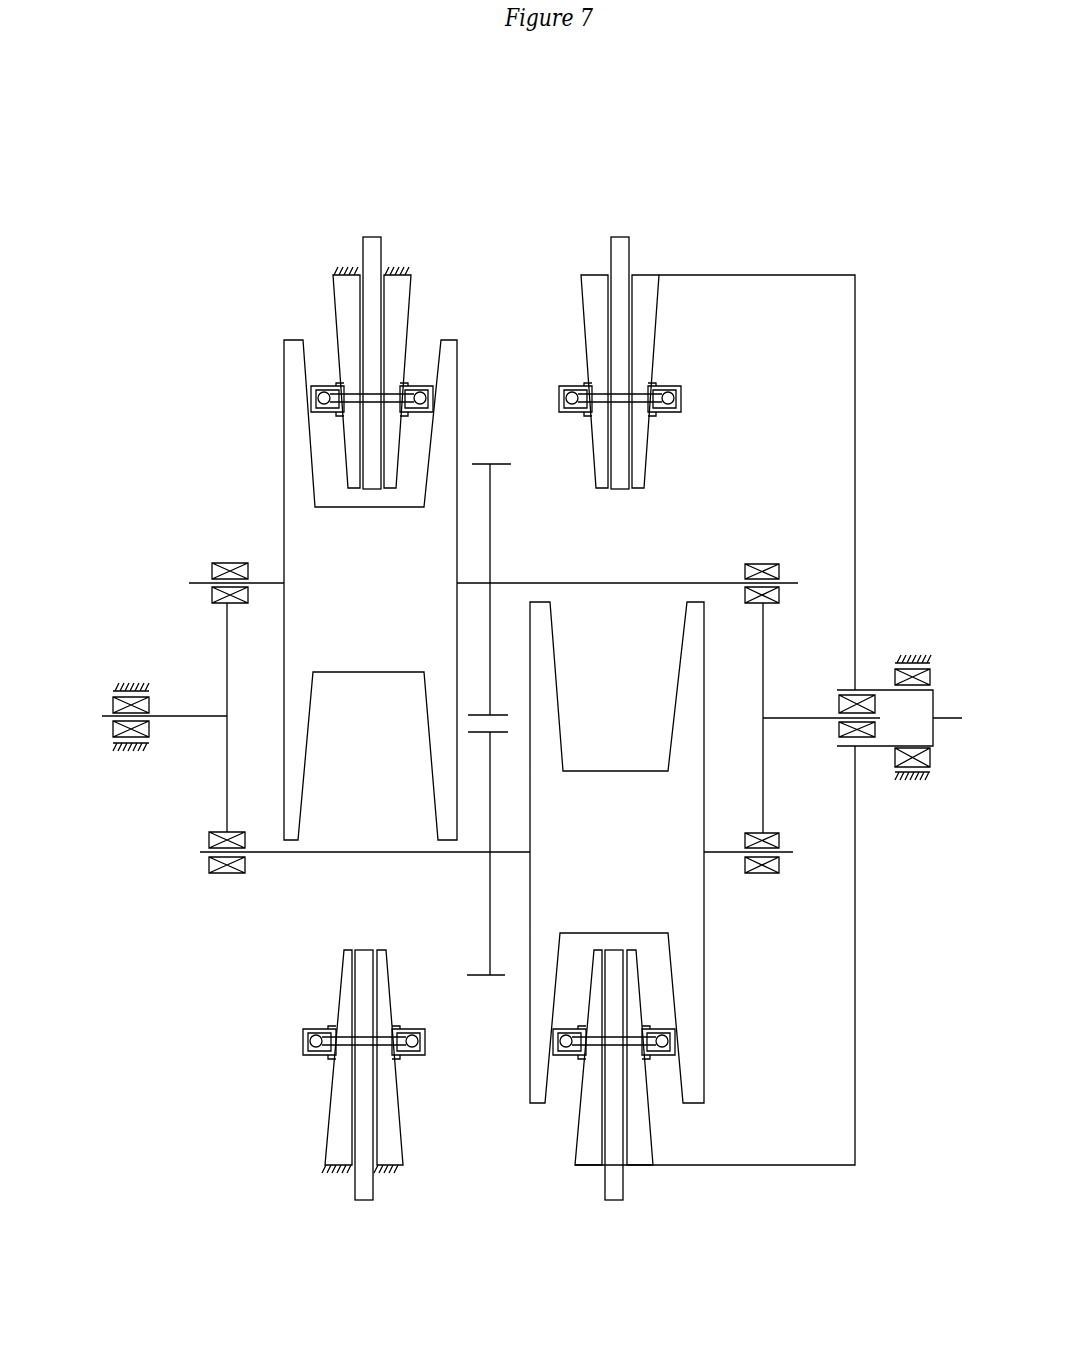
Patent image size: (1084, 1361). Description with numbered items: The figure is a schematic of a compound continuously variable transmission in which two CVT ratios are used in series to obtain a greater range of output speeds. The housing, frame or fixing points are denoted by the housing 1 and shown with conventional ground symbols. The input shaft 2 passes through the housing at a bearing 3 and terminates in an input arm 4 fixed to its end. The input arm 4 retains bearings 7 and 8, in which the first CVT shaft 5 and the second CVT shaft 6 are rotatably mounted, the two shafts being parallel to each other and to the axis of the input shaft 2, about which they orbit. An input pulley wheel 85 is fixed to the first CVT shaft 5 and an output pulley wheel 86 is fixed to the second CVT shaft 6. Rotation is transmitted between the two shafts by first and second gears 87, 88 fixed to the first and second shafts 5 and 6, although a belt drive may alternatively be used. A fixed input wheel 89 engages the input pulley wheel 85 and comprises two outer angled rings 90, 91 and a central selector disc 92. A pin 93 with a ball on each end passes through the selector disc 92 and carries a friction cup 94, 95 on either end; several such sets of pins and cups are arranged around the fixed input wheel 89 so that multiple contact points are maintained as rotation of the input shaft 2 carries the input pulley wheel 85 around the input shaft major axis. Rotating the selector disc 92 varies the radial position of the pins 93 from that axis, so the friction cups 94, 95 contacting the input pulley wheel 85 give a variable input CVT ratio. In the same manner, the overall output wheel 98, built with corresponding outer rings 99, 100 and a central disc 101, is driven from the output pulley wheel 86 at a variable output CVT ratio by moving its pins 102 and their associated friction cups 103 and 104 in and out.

The housing 1 is at (138, 683).
The input shaft 2 is at (101, 716).
The bearing 3 is at (123, 728).
The input arm 4 is at (225, 763).
The first CVT shaft 5 is at (268, 582).
The second CVT shaft 6 is at (288, 855).
The bearing 7 is at (222, 572).
The bearing 8 is at (225, 867).
The input pulley wheel 85 is at (297, 405).
The output pulley wheel 86 is at (537, 1078).
The first gear 87 is at (492, 457).
The second gear 88 is at (485, 978).
The fixed input wheel 89 is at (323, 324).
The outer angled ring 90 is at (347, 290).
The outer angled ring 91 is at (398, 310).
The selector disc 92 is at (370, 247).
The pin 93 is at (357, 1043).
The friction cup 94 is at (302, 1038).
The friction cup 95 is at (415, 1060).
The overall output wheel 98 is at (690, 1208).
The second actuator left element 99 is at (590, 285).
The second actuator right element 100 is at (649, 285).
The second actuator shaft 101 is at (620, 250).
The pin 102 is at (626, 394).
The friction cup 103 is at (670, 383).
The friction cup 104 is at (567, 383).